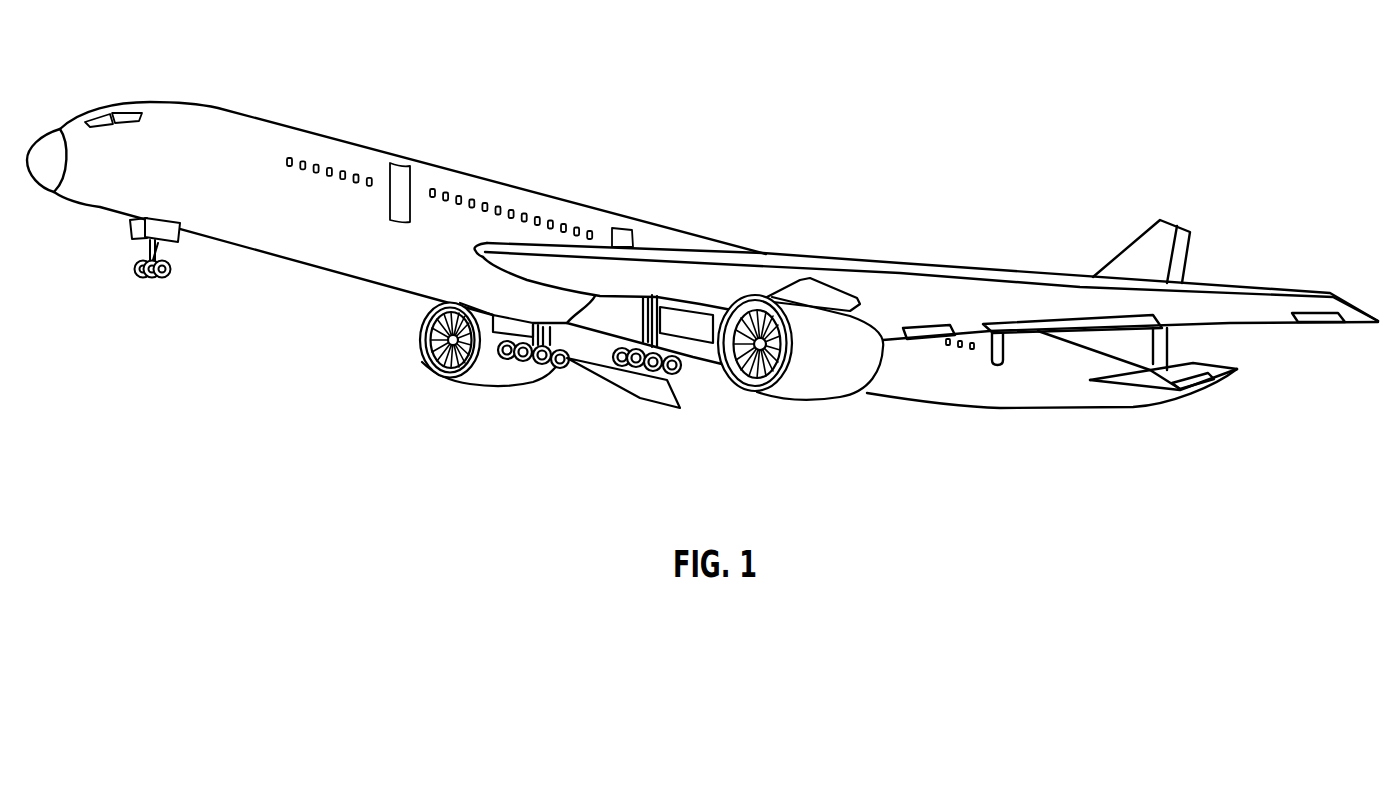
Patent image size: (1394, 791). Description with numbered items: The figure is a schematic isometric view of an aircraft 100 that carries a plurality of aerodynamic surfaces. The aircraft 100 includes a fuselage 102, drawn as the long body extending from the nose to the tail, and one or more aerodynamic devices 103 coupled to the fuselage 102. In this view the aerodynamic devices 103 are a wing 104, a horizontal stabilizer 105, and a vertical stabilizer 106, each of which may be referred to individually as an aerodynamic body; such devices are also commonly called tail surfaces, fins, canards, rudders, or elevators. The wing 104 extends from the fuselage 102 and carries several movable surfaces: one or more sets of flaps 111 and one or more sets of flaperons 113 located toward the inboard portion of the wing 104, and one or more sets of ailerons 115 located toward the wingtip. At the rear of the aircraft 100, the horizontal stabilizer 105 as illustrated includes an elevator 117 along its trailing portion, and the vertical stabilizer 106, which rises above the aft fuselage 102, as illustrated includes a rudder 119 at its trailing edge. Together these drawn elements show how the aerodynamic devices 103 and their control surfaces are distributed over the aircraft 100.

The aircraft 100 is at (835, 124).
The fuselage 102 is at (214, 104).
The aerodynamic devices 103 is at (926, 284).
The wing 104 is at (905, 265).
The horizontal stabilizer 105 is at (1232, 367).
The vertical stabilizer 106 is at (1129, 245).
The flaps 111 is at (1032, 330).
The flaperons 113 is at (930, 332).
The ailerons 115 is at (1313, 318).
The elevator 117 is at (1200, 380).
The rudder 119 is at (1187, 263).